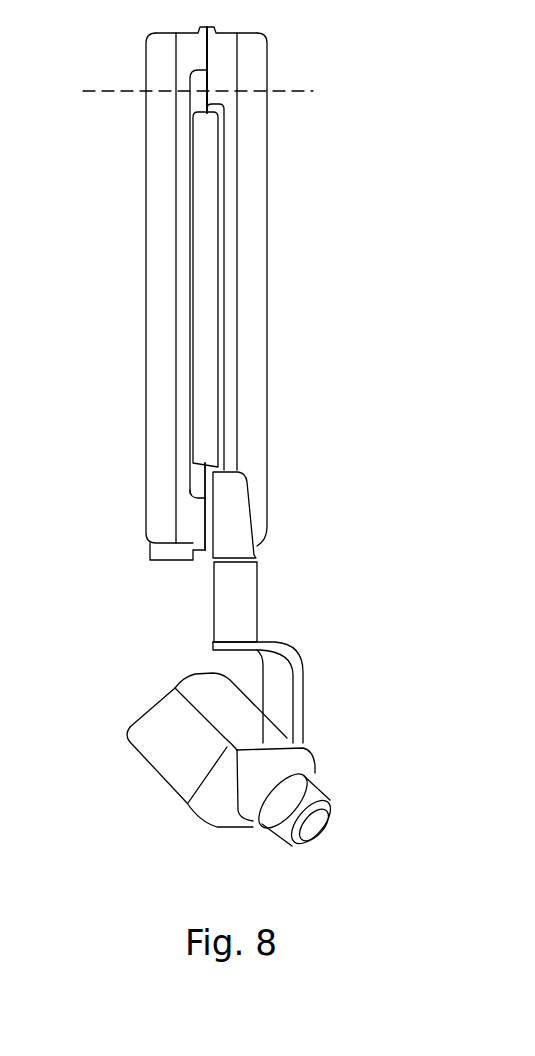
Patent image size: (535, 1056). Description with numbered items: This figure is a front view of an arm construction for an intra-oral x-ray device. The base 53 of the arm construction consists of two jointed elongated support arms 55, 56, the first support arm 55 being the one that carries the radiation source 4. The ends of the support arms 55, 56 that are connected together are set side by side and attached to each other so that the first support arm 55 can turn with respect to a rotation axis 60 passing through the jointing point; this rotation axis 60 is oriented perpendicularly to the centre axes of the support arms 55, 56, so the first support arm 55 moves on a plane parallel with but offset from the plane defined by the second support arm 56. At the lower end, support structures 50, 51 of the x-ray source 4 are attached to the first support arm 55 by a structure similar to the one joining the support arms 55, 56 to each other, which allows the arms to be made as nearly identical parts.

The radiation source 4 is at (142, 760).
The support structure 50 is at (254, 553).
The support structure 51 is at (257, 610).
The base 53 is at (317, 177).
The first support arm 55 is at (267, 316).
The second support arm 56 is at (145, 232).
The rotation axis 60 is at (330, 91).